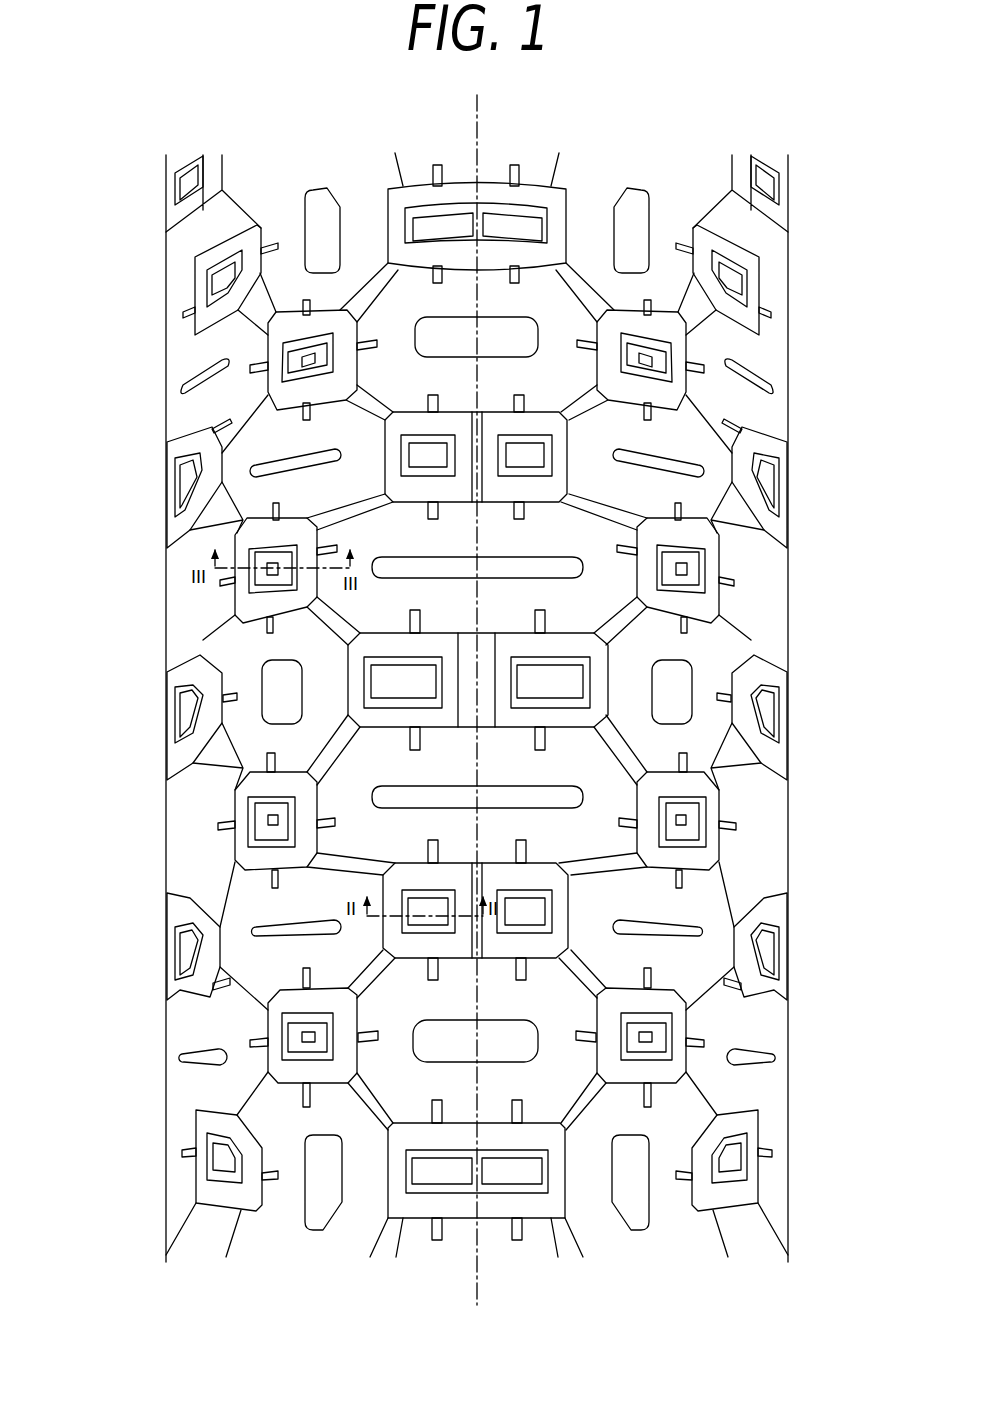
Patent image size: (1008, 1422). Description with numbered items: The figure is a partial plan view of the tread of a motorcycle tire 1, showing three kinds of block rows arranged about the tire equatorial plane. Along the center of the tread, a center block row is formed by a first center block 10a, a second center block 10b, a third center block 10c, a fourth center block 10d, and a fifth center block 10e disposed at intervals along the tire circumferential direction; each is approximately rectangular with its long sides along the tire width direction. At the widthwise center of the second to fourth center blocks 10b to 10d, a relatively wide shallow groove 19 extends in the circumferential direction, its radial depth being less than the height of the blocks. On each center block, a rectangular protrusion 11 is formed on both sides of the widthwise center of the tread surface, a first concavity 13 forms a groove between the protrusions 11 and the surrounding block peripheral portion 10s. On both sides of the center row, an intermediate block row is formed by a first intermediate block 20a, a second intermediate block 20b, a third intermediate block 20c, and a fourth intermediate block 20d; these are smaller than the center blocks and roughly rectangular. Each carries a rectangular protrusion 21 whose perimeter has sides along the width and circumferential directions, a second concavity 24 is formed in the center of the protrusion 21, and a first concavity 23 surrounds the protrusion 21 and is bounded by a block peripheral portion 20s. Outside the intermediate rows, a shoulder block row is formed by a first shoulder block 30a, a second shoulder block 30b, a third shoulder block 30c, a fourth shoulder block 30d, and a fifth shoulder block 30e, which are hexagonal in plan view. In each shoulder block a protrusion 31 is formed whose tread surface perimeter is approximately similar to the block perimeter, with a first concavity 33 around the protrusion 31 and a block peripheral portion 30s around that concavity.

The tire 1 is at (682, 134).
The first center block 10a is at (492, 1225).
The second center block 10b is at (380, 875).
The third center block 10c is at (555, 633).
The fourth center block 10d is at (482, 662).
The fifth center block 10e is at (482, 708).
The block peripheral portion 10s is at (458, 190).
The protrusion 11 is at (433, 222).
The first concavity 13 is at (463, 243).
The shallow groove 19 is at (474, 427).
The first intermediate block 20a is at (260, 1063).
The second intermediate block 20b is at (228, 840).
The third intermediate block 20c is at (228, 597).
The fourth intermediate block 20d is at (475, 689).
The block peripheral portion 20s is at (333, 320).
The protrusion 21 is at (308, 365).
The first concavity 23 is at (300, 362).
The second concavity 24 is at (305, 357).
The first shoulder block 30a is at (192, 1180).
The second shoulder block 30b is at (166, 977).
The third shoulder block 30c is at (166, 734).
The fourth shoulder block 30d is at (160, 505).
The fifth shoulder block 30e is at (460, 735).
The block peripheral portion 30s is at (203, 317).
The protrusion 31 is at (217, 278).
The first concavity 33 is at (237, 257).